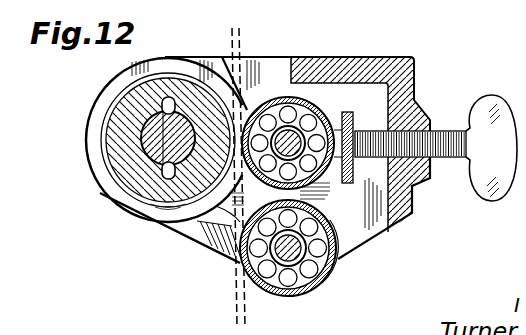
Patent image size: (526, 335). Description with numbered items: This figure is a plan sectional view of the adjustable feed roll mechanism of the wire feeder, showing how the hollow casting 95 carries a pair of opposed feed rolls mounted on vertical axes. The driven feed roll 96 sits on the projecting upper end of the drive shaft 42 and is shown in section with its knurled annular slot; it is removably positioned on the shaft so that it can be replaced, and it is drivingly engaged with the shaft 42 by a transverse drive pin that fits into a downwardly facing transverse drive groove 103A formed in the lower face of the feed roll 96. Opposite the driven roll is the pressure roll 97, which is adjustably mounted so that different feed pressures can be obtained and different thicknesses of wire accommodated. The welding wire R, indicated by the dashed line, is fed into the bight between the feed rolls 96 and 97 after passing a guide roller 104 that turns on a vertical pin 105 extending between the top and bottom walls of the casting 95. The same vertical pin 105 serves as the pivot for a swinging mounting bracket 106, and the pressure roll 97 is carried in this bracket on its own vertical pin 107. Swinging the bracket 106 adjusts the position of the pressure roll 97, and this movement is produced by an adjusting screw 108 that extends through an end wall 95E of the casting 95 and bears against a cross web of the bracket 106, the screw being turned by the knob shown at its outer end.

The drive shaft 42 is at (152, 150).
The casting 95 is at (402, 58).
The end wall 95E is at (413, 200).
The feed roll 96 is at (123, 107).
The pressure roll 97 is at (256, 111).
The transverse drive groove 103A is at (172, 96).
The guide roller 104 is at (299, 296).
The vertical pin 105 is at (330, 265).
The swinging mounting bracket 106 is at (331, 197).
The vertical pin 107 is at (323, 110).
The adjusting screw 108 is at (466, 127).
The welding wire R is at (232, 276).